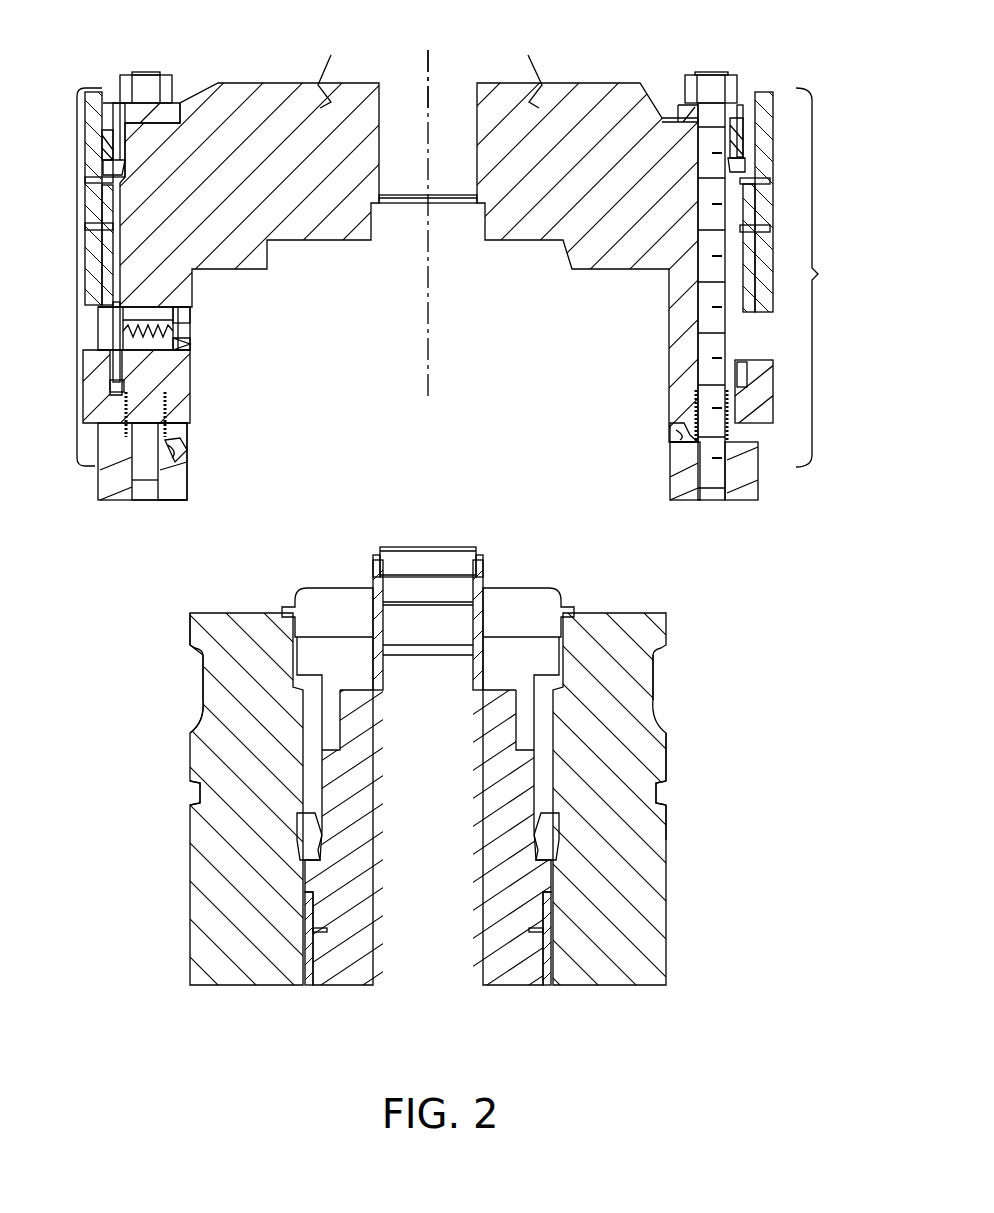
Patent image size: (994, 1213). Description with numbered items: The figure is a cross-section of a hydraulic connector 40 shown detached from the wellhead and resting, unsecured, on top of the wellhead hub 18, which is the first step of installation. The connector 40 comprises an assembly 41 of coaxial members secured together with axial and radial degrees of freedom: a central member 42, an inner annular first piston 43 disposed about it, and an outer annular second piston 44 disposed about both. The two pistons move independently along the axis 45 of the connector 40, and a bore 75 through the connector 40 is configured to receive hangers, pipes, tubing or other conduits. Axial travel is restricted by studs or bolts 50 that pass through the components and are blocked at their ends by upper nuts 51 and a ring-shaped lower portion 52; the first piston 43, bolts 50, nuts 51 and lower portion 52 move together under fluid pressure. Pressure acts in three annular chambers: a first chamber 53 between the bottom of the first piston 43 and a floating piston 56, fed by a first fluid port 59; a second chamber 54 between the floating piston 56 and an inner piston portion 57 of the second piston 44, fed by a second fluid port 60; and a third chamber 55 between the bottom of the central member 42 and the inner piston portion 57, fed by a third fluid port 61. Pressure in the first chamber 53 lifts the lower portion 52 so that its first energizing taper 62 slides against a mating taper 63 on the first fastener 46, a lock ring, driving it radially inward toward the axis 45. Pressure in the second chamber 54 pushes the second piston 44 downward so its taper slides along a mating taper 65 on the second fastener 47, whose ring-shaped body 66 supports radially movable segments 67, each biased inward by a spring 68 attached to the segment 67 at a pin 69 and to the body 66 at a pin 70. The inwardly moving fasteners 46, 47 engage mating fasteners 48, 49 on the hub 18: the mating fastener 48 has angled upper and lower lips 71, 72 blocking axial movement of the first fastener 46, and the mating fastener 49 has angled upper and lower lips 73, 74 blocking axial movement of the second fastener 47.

The wellhead hub 18 is at (667, 897).
The connector 40 is at (796, 55).
The assembly 41 is at (818, 275).
The central member 42 is at (280, 83).
The first piston 43 is at (181, 103).
The second piston 44 is at (98, 86).
The axis 45 is at (432, 350).
The first fastener 46 is at (182, 452).
The second fastener 47 is at (292, 334).
The mating fastener 48 is at (198, 793).
The mating fastener 49 is at (197, 675).
The stud or bolt 50 is at (712, 300).
The upper nut 51 is at (160, 75).
The lower portion 52 is at (105, 487).
The first chamber 53 is at (103, 143).
The second chamber 54 is at (112, 180).
The third chamber 55 is at (110, 250).
The floating piston 56 is at (102, 168).
The inner piston portion 57 is at (98, 205).
The first fluid port 59 is at (117, 103).
The second fluid port 60 is at (768, 180).
The third fluid port 61 is at (768, 232).
The first energizing taper 62 is at (182, 485).
The mating taper 63 is at (170, 500).
The mating taper 65 is at (98, 315).
The ring-shaped body 66 is at (160, 353).
The segment 67 is at (165, 353).
The spring 68 is at (190, 313).
The pin 69 is at (185, 338).
The pin 70 is at (113, 340).
The upper lip 71 is at (665, 760).
The lower lip 72 is at (665, 815).
The upper lip 73 is at (192, 640).
The lower lip 74 is at (195, 720).
The bore 75 is at (432, 65).